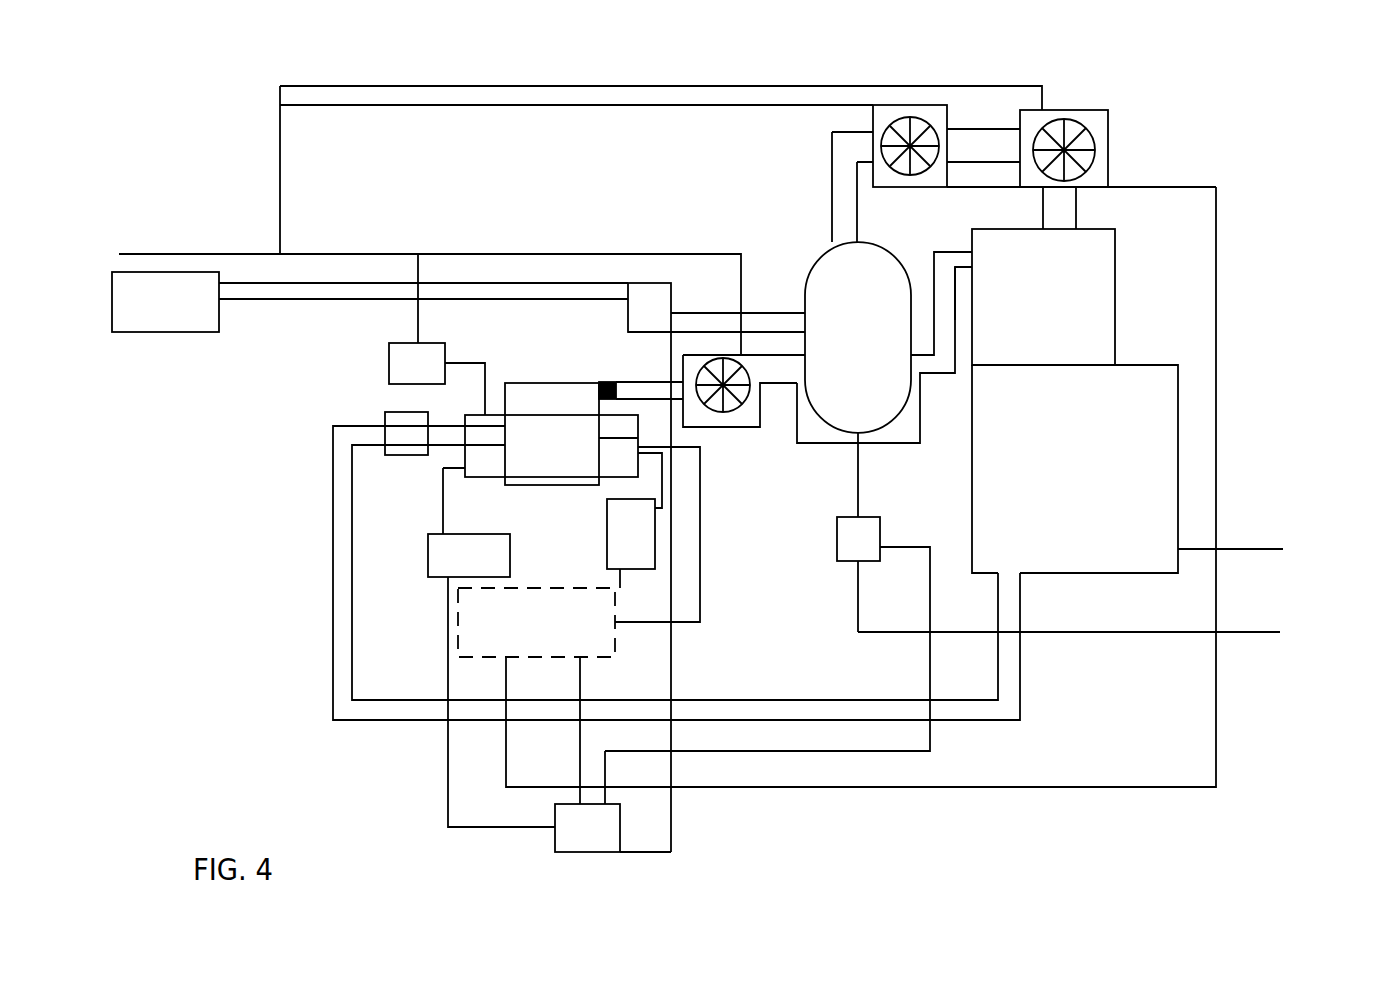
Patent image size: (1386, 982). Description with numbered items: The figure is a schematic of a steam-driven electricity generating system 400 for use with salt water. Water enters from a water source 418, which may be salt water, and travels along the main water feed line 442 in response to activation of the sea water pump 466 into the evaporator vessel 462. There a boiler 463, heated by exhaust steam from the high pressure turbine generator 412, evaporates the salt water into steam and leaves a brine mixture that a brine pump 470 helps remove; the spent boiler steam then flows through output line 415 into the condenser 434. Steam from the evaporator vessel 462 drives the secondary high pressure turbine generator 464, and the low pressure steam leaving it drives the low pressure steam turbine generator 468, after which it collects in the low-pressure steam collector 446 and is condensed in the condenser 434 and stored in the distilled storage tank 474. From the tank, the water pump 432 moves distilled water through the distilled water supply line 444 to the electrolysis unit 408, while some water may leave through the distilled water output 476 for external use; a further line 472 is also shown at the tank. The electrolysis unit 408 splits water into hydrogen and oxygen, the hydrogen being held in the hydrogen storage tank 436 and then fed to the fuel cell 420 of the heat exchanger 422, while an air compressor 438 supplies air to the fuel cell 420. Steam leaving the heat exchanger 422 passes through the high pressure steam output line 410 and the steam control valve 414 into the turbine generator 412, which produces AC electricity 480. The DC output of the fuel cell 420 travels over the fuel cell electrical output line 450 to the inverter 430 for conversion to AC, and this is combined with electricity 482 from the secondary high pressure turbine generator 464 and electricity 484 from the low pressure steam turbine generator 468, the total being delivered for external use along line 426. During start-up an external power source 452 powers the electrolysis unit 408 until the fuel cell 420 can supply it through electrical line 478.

The steam-driven electricity generating system 400 is at (228, 92).
The electrolysis unit 408 is at (610, 657).
The high pressure steam output line 410 is at (645, 386).
The turbine generator 412 is at (683, 355).
The steam control valve 414 is at (597, 382).
The output line 415 is at (955, 320).
The water source 418 is at (190, 333).
The fuel cell 420 is at (465, 477).
The heat exchanger 422 is at (530, 485).
The electricity 426 is at (232, 253).
The inverter 430 is at (388, 364).
The water pump 432 is at (403, 455).
The condenser 434 is at (1115, 280).
The hydrogen storage tank 436 is at (655, 569).
The air compressor 438 is at (428, 556).
The main water feed line 442 is at (260, 300).
The distilled water supply line 444 is at (427, 720).
The low-pressure steam collector 446 is at (1063, 213).
The fuel cell electrical output line 450 is at (485, 383).
The external power source 452 is at (622, 828).
The evaporator vessel 462 is at (817, 260).
The boiler 463 is at (838, 443).
The secondary high pressure turbine generator 464 is at (882, 105).
The sea water pump 466 is at (658, 283).
The low pressure steam turbine generator 468 is at (1108, 129).
The brine pump 470 is at (835, 542).
The outlet line 472 is at (1247, 632).
The distilled storage tank 474 is at (1100, 573).
The distilled water output 476 is at (1242, 549).
The electrical line 478 is at (700, 500).
The electricity 480 is at (503, 252).
The electricity 482 is at (517, 105).
The electricity 484 is at (655, 86).